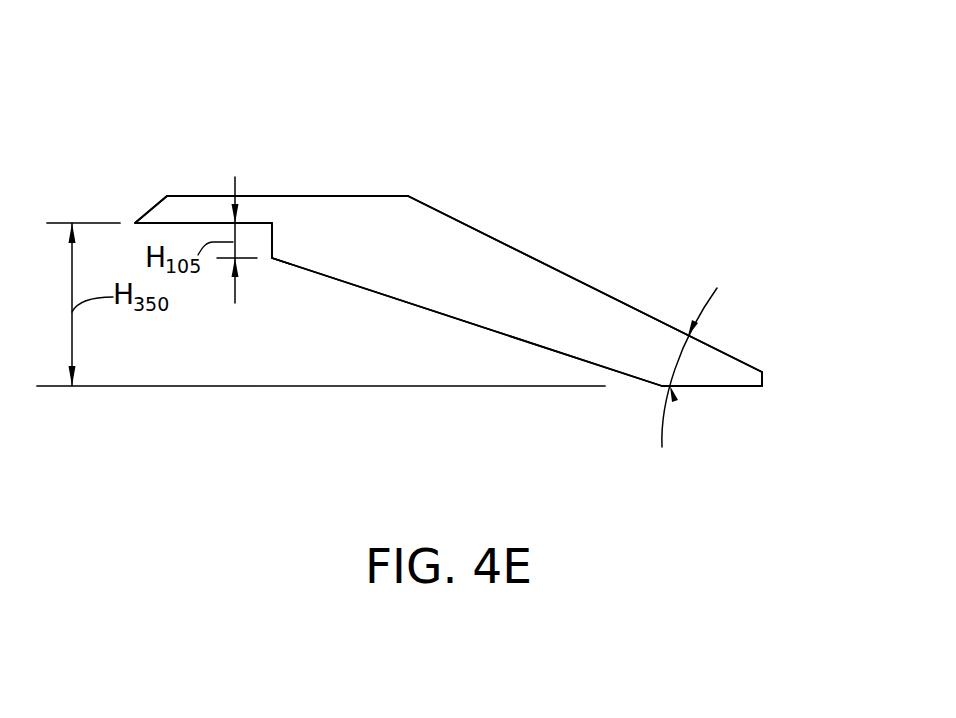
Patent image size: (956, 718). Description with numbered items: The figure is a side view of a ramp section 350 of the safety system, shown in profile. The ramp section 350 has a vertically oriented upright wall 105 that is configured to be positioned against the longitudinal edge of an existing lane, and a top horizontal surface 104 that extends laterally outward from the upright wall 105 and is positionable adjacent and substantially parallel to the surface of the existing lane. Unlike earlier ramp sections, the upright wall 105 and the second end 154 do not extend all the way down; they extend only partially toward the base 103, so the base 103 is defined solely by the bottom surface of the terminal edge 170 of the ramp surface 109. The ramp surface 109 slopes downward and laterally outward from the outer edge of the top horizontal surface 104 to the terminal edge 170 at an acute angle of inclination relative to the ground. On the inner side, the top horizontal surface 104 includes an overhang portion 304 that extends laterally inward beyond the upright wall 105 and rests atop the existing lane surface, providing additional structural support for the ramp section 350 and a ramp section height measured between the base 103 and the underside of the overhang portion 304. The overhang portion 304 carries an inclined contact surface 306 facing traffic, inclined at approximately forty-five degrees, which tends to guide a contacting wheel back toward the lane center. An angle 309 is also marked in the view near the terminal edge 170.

The ramp section 350 is at (514, 88).
The top horizontal surface 104 is at (318, 197).
The inclined contact surface 306 is at (153, 208).
The overhang portion 304 is at (182, 196).
The ramp surface 109 is at (575, 275).
The upright wall 105 is at (272, 240).
The second end 154 is at (377, 250).
The terminal edge 170 is at (812, 384).
The base 103 is at (720, 387).
The angle theta 309 is at (673, 362).